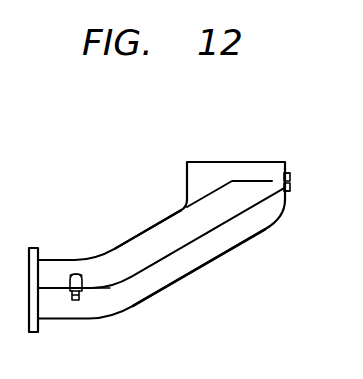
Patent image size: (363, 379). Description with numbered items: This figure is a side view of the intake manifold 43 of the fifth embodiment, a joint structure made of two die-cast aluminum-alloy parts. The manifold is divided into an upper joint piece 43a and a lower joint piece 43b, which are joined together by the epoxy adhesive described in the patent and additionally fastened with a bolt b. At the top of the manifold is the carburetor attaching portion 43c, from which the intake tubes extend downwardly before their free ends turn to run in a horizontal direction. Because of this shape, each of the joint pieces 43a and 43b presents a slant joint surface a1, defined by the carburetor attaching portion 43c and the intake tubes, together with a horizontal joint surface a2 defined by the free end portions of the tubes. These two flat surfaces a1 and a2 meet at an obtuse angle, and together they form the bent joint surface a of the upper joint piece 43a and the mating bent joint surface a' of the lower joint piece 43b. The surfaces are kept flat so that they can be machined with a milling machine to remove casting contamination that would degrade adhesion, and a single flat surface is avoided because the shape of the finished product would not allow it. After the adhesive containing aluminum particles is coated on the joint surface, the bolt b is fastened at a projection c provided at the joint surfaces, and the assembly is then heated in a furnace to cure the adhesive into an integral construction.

The intake manifold 43 is at (252, 156).
The upper joint piece 43a is at (152, 220).
The lower joint piece 43b is at (262, 240).
The carburetor attaching portion 43c is at (208, 172).
The bent joint surface a is at (161, 238).
The slant joint surface a1 is at (160, 267).
The horizontal joint surface a2 is at (97, 293).
The bent joint surface a' is at (221, 257).
The bolt b is at (77, 300).
The projection c is at (76, 273).